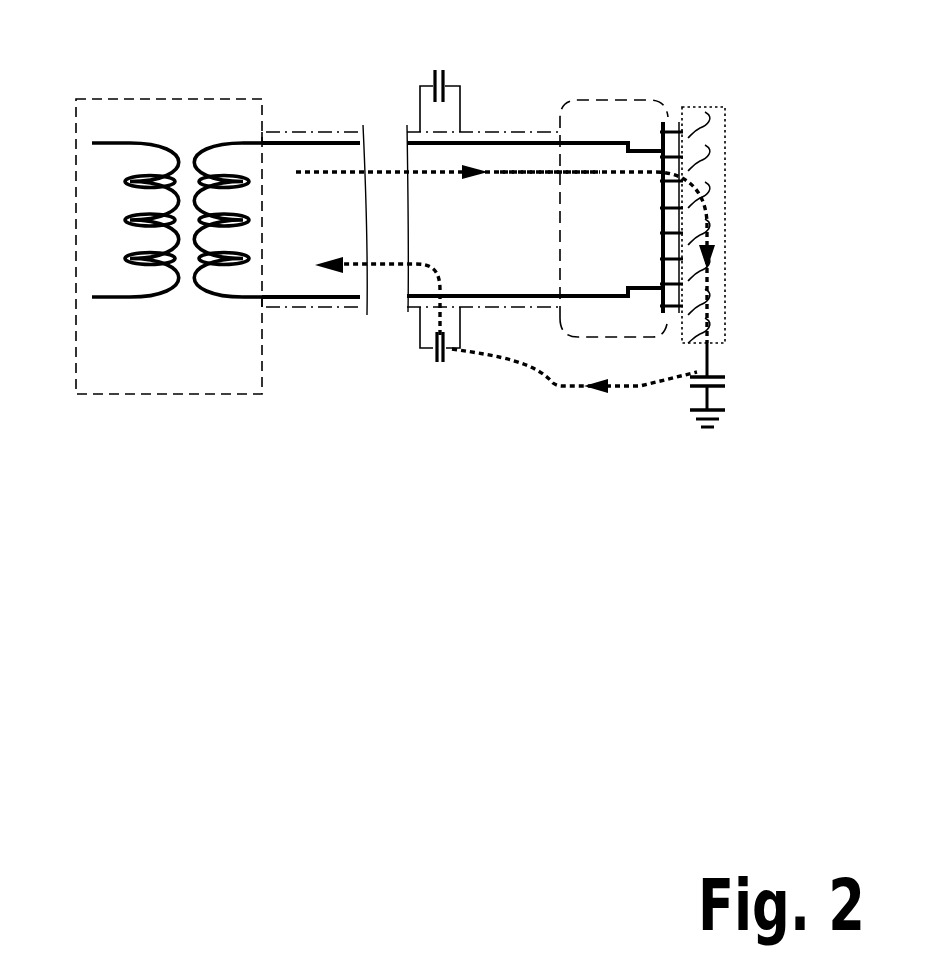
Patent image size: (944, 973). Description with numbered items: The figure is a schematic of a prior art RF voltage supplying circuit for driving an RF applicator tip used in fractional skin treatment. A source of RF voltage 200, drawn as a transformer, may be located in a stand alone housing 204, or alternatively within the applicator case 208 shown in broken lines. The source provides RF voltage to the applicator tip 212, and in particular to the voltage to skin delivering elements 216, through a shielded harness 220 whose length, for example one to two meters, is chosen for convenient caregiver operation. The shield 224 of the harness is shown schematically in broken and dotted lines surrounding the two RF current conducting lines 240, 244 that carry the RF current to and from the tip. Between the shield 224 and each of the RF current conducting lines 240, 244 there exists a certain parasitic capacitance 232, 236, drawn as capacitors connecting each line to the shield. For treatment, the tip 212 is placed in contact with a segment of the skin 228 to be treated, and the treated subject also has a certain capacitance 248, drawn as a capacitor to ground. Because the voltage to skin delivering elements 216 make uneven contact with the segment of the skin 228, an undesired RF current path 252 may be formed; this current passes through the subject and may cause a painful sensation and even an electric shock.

The source of RF voltage 200 is at (131, 72).
The stand alone housing 204 is at (122, 394).
The applicator case 208 is at (546, 369).
The applicator tip 212 is at (660, 150).
The voltage to skin delivering elements 216 is at (669, 315).
The shielded harness 220 is at (301, 115).
The shield 224 is at (540, 121).
The segment of the skin 228 is at (700, 106).
The parasitic capacitance 232 is at (465, 98).
The parasitic capacitance 236 is at (456, 352).
The RF current conducting line 240 is at (338, 146).
The RF current conducting line 244 is at (313, 293).
The capacitance of the treated subject 248 is at (726, 385).
The undesired RF current path 252 is at (522, 178).